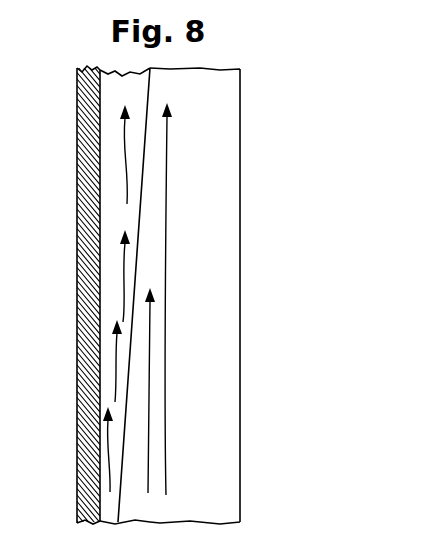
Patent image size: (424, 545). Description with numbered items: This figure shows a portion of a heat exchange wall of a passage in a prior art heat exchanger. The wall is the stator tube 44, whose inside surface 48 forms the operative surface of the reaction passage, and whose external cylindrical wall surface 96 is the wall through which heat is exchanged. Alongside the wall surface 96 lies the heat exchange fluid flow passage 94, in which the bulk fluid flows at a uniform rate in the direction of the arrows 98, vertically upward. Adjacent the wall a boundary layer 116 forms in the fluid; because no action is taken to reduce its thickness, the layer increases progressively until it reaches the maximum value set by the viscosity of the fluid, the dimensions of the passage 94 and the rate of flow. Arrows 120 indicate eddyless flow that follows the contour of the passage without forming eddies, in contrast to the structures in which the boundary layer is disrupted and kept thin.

The stator tube 44 is at (90, 233).
The inside surface of the tube 48 is at (77, 289).
The heat exchange fluid flow passage 94 is at (190, 102).
The external cylindrical wall surface 96 is at (100, 142).
The arrows 98 is at (110, 370).
The boundary layer 116 is at (113, 188).
The arrows 120 is at (167, 456).